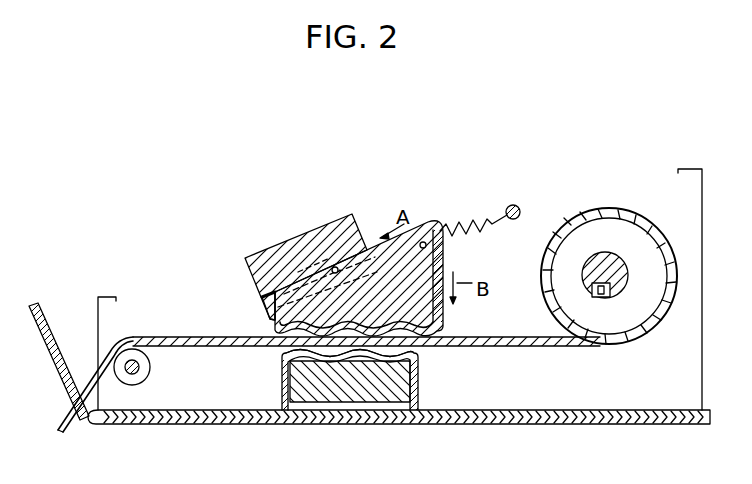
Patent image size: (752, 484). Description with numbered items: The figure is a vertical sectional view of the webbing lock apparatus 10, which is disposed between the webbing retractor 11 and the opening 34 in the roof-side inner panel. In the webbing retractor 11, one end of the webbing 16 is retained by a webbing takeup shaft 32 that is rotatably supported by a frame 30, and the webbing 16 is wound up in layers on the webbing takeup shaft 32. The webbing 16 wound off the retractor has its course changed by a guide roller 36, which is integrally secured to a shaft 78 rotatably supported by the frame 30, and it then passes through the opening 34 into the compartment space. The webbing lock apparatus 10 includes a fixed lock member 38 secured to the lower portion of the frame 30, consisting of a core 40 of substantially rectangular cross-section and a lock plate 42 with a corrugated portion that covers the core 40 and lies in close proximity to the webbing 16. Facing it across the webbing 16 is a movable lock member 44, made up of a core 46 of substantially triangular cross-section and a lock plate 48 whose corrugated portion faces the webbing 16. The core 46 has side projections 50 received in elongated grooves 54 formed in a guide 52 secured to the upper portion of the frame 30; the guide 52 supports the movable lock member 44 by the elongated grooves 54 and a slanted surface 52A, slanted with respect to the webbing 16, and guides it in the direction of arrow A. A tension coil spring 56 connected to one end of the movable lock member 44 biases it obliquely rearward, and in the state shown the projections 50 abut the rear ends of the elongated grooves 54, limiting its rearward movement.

The webbing lock apparatus 10 is at (365, 245).
The webbing retractor 11 is at (610, 265).
The webbing 16 is at (540, 347).
The frame 30 is at (657, 395).
The webbing takeup shaft 32 is at (605, 258).
The opening 34 is at (66, 382).
The guide roller 36 is at (151, 368).
The fixed lock member 38 is at (359, 381).
The core 40 is at (293, 378).
The lock plate 42 is at (420, 360).
The movable lock member 44 is at (445, 257).
The core 46 is at (372, 258).
The lock plate 48 is at (446, 333).
The projections 50 is at (298, 272).
The guide 52 is at (258, 257).
The slanted surface 52A is at (335, 267).
The elongated grooves 54 is at (268, 305).
The tension coil spring 56 is at (468, 226).
The shaft 78 is at (132, 347).